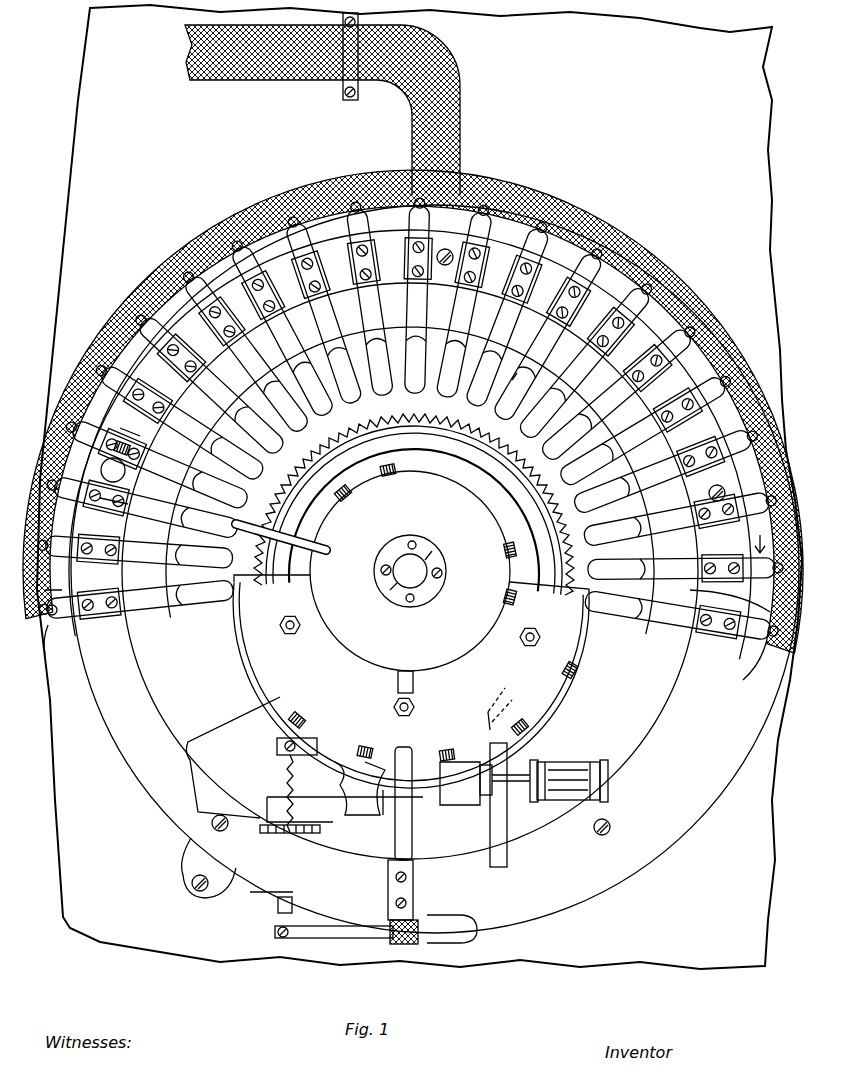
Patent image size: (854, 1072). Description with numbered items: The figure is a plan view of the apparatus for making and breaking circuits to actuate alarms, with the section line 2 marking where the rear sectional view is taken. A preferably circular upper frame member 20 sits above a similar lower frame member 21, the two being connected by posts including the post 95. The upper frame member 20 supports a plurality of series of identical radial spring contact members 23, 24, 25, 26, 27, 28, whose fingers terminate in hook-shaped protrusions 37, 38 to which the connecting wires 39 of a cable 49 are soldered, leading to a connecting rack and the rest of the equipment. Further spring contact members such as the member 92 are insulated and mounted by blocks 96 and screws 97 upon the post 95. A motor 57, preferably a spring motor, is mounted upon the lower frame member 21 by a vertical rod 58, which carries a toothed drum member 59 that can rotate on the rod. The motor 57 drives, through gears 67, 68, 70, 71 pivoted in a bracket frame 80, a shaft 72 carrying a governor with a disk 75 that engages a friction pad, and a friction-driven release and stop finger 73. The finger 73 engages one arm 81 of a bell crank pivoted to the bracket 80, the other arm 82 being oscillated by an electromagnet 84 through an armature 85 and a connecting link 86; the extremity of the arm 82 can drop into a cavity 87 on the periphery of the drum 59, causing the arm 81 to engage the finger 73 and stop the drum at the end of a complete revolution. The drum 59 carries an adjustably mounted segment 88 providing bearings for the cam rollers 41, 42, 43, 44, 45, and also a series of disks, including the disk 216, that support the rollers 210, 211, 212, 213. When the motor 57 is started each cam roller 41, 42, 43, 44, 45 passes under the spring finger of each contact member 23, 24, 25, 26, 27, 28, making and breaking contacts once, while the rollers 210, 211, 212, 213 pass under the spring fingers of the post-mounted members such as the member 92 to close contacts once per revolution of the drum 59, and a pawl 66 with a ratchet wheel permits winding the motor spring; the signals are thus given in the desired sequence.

The section line 2 is at (397, 568).
The upper frame member 20 is at (117, 707).
The lower frame member 21 is at (175, 703).
The spring contact member 23 is at (414, 886).
The spring contact member 24 is at (412, 270).
The spring contact member 25 is at (220, 320).
The spring contact member 26 is at (265, 292).
The spring contact member 27 is at (305, 272).
The spring contact member 28 is at (350, 258).
The hook-shaped protrusion 37 is at (55, 618).
The hook-shaped protrusion 38 is at (45, 655).
The connecting wire 39 is at (690, 590).
The cam roller 41 is at (302, 712).
The cam roller 42 is at (364, 745).
The cam roller 43 is at (447, 748).
The cam roller 44 is at (530, 724).
The cam roller 45 is at (580, 668).
The cable 49 is at (282, 60).
The motor 57 is at (318, 526).
The vertical rod 58 is at (393, 574).
The toothed drum member 59 is at (500, 513).
The pawl 66 is at (517, 373).
The gear 67 is at (442, 778).
The gear 68 is at (383, 818).
The gear 70 is at (352, 815).
The gear 71 is at (285, 767).
The shaft 72 is at (278, 906).
The release and stop finger 73 is at (288, 834).
The disk 75 is at (222, 897).
The bracket frame 80 is at (280, 740).
The arm of bell crank 81 is at (268, 800).
The arm of bell crank 82 is at (505, 748).
The electromagnet 84 is at (590, 765).
The armature 85 is at (588, 760).
The connecting link 86 is at (518, 782).
The cavity 87 is at (505, 688).
The segment 88 is at (267, 623).
The spring contact member 92 is at (110, 504).
The post 95 is at (118, 472).
The block 96 is at (115, 450).
The screw 97 is at (130, 436).
The roller 210 is at (389, 478).
The roller 211 is at (347, 500).
The roller 212 is at (503, 552).
The roller 213 is at (503, 596).
The disk 216 is at (460, 508).